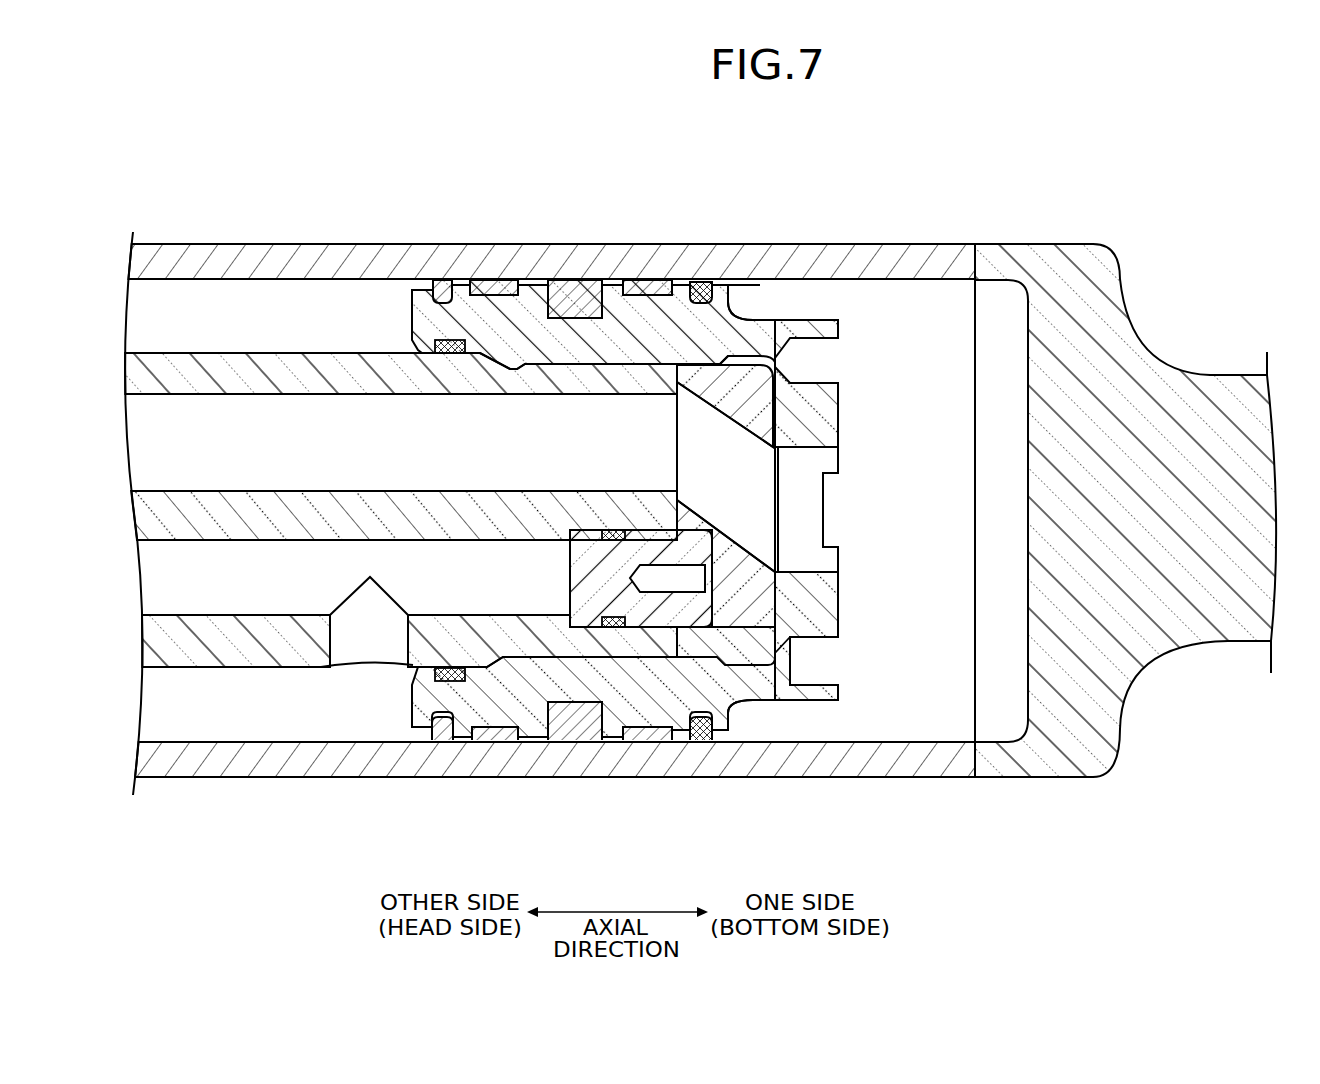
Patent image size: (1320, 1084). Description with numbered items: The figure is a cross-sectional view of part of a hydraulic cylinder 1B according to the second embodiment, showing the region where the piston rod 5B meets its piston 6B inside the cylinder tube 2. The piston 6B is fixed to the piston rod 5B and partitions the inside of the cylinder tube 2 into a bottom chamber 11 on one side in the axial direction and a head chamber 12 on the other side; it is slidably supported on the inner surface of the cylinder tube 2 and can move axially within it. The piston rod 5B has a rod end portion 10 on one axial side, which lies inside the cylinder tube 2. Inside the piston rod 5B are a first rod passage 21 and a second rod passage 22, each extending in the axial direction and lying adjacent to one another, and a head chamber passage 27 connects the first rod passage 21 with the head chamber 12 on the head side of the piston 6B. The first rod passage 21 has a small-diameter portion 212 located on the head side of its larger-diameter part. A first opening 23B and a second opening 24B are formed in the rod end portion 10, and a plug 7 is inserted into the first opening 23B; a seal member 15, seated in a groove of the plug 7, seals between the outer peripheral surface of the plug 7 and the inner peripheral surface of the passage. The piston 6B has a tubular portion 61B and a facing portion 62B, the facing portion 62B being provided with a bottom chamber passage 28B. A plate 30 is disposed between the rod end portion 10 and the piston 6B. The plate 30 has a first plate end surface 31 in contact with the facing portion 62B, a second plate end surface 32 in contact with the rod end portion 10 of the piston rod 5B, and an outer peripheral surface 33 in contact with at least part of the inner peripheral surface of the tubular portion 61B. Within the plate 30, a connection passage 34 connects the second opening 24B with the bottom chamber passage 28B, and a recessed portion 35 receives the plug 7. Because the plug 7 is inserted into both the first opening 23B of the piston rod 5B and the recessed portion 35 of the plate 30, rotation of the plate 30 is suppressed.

The hydraulic cylinder 1B is at (1001, 205).
The cylinder tube 2 is at (289, 244).
The piston rod 5B is at (246, 352).
The piston 6B is at (757, 320).
The plug 7 is at (592, 619).
The rod end portion 10 is at (700, 645).
The bottom chamber 11 is at (935, 310).
The head chamber 12 is at (322, 730).
The seal member 15 is at (612, 637).
The first rod passage 21 is at (249, 600).
The second rod passage 22 is at (342, 407).
The first opening 23B is at (673, 637).
The second opening 24B is at (690, 378).
The head chamber passage 27 is at (362, 640).
The bottom chamber passage 28B is at (810, 458).
The plate 30 is at (717, 377).
The first plate end surface 31 is at (787, 398).
The second plate end surface 32 is at (685, 406).
The outer peripheral surface 33 is at (696, 280).
The connection passage 34 is at (763, 533).
The recessed portion 35 is at (692, 630).
The tubular portion 61B is at (618, 305).
The facing portion 62B is at (813, 593).
The small-diameter portion 212 is at (468, 600).